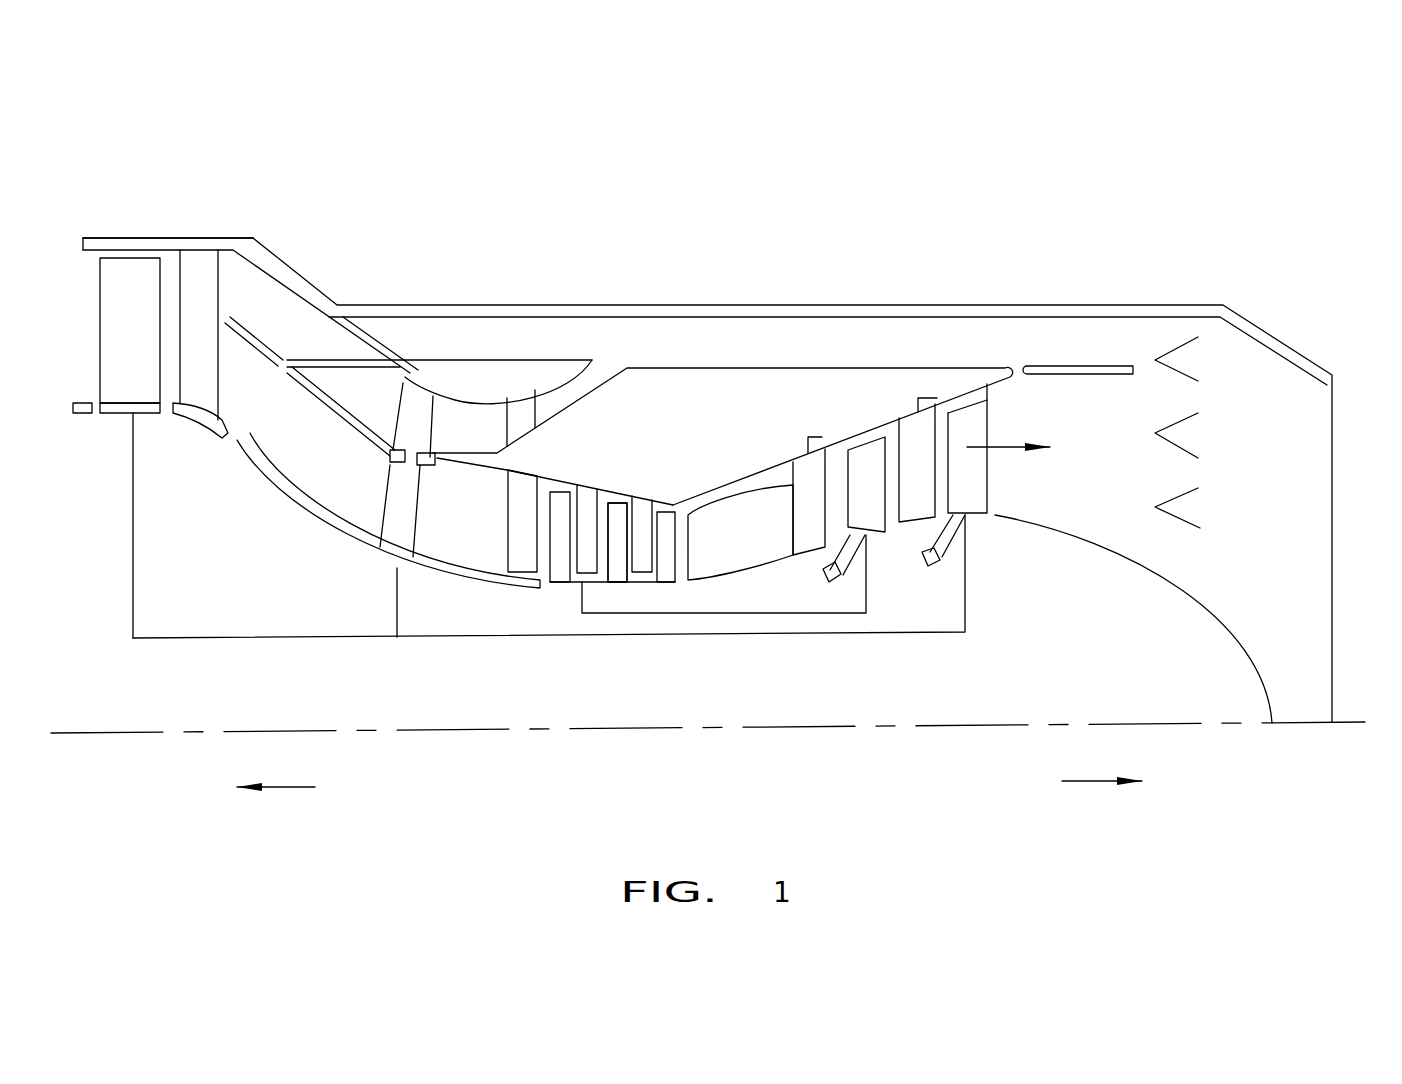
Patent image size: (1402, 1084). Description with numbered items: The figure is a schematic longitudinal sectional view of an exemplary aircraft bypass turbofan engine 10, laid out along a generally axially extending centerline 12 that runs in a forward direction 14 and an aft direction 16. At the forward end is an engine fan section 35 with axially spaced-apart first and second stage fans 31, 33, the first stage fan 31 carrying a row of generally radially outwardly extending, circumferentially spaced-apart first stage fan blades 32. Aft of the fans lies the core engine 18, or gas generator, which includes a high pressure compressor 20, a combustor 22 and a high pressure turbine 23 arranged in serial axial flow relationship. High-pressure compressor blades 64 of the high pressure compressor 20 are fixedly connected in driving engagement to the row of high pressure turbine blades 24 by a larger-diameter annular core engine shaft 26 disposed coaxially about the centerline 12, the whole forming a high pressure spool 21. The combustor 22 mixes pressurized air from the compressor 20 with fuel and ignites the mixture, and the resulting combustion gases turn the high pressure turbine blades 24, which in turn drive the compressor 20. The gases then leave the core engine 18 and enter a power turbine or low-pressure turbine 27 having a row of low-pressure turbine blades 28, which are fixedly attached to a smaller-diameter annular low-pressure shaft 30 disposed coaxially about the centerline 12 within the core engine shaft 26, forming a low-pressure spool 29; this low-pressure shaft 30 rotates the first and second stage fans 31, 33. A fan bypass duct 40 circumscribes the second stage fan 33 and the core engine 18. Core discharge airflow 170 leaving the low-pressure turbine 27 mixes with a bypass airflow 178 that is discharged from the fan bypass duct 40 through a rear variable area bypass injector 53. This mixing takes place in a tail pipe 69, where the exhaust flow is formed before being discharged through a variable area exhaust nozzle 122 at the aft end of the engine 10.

The turbofan engine 10 is at (660, 283).
The centerline 12 is at (1117, 723).
The forward direction 14 is at (262, 787).
The aft direction 16 is at (1113, 781).
The core engine 18 is at (725, 458).
The high pressure compressor 20 is at (593, 478).
The high pressure spool 21 is at (690, 626).
The combustor 22 is at (762, 549).
The high pressure turbine 23 is at (823, 560).
The high pressure turbine blades 24 is at (872, 458).
The core engine shaft 26 is at (608, 613).
The low-pressure turbine 27 is at (912, 543).
The low-pressure turbine blades 28 is at (978, 492).
The low-pressure spool 29 is at (483, 677).
The low-pressure shaft 30 is at (788, 636).
The first stage fan 31 is at (112, 186).
The first stage fan blades 32 is at (152, 354).
The second stage fan 33 is at (423, 375).
The engine fan section 35 is at (347, 283).
The fan bypass duct 40 is at (850, 348).
The rear variable area bypass injector 53 is at (1058, 365).
The high-pressure compressor blades 64 is at (618, 510).
The tail pipe 69 is at (1027, 302).
The variable area exhaust nozzle 122 is at (1262, 322).
The core discharge airflow 170 is at (1023, 443).
The bypass airflow 178 is at (905, 335).